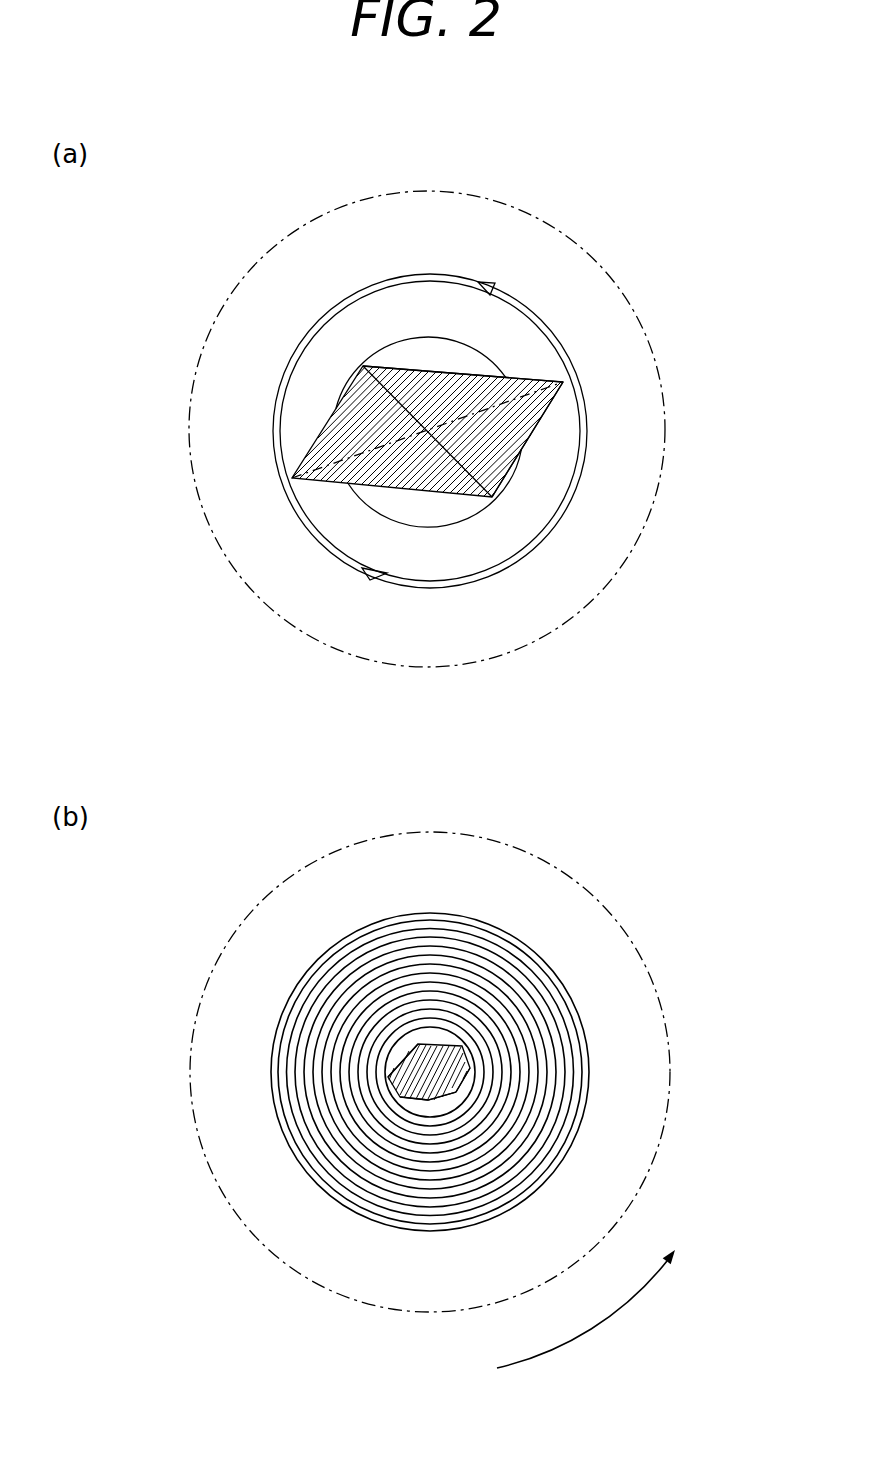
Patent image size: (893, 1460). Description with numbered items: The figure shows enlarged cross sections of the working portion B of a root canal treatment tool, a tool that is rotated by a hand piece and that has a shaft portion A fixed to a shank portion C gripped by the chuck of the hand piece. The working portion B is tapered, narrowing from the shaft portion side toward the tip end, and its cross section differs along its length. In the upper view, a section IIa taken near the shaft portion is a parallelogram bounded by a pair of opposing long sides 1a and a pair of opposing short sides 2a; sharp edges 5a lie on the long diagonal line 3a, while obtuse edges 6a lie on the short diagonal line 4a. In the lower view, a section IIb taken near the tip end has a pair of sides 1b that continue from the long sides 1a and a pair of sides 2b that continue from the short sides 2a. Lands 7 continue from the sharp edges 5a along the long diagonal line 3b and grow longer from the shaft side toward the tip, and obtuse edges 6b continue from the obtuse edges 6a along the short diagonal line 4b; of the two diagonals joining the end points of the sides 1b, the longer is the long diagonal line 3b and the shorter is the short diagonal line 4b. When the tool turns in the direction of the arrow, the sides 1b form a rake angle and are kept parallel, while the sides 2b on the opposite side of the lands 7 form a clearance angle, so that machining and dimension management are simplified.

The shank portion C is at (613, 275).
The working portion B is at (560, 332).
The shaft portion A is at (587, 478).
The long sides 1a is at (460, 373).
The short sides 2a is at (533, 437).
The long diagonal line 3a is at (488, 405).
The short diagonal line 4a is at (500, 465).
The sharp edges 5a is at (563, 383).
The obtuse edges 6a is at (492, 497).
The section IIa is at (425, 362).
The lands 7 is at (467, 1045).
The sides 1b is at (430, 1044).
The sides 2b is at (468, 1075).
The long diagonal line 3b is at (425, 1102).
The short diagonal line 4b is at (455, 1090).
The obtuse edges 6b is at (432, 1104).
The section IIb is at (403, 1048).